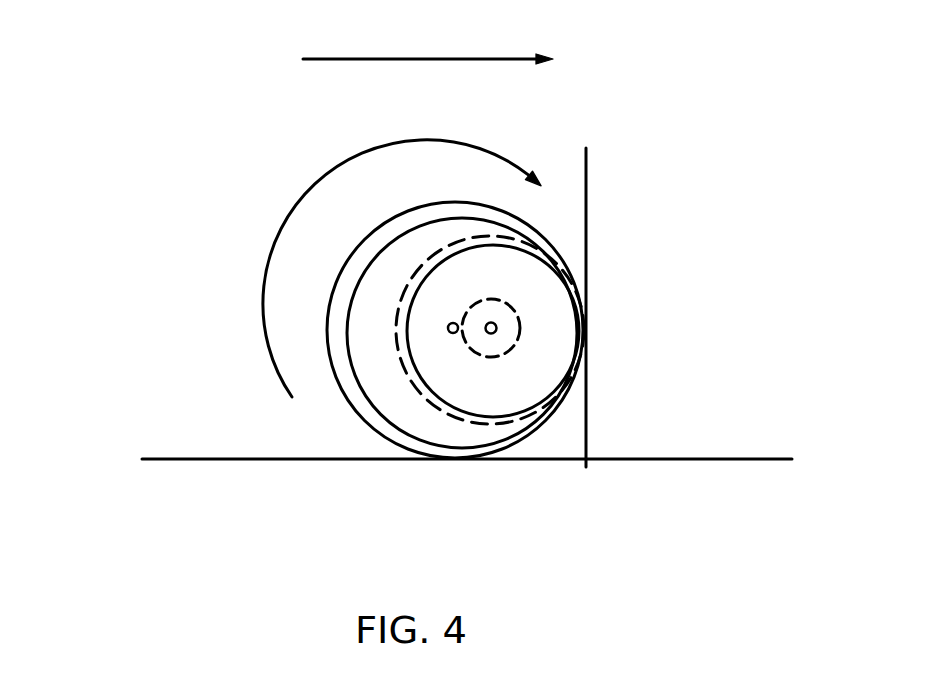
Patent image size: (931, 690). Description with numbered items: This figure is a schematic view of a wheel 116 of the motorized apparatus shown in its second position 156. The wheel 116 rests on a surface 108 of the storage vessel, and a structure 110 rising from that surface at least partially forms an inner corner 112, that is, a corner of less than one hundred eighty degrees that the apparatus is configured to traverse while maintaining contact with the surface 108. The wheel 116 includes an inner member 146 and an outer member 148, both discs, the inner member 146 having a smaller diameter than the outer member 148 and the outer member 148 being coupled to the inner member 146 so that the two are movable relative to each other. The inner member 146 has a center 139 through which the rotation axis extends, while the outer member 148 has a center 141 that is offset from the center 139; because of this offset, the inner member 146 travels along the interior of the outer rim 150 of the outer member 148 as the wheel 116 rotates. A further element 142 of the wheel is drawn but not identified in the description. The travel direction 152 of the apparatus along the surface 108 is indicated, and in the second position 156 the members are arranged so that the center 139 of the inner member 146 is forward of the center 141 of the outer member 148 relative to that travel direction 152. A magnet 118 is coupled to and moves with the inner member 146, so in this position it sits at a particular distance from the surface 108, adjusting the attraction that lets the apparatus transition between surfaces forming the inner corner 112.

The surface 108 is at (202, 460).
The structure 110 is at (709, 431).
The inner corner 112 is at (600, 480).
The wheel 116 is at (285, 293).
The magnet 118 is at (565, 262).
The center of inner member 139 is at (498, 327).
The center of outer member 141 is at (452, 334).
The eccentric hub 142 is at (476, 356).
The inner member 146 is at (500, 385).
The outer member 148 is at (567, 402).
The outer rim 150 is at (447, 445).
The travel direction 152 is at (427, 59).
The second position 156 is at (237, 177).